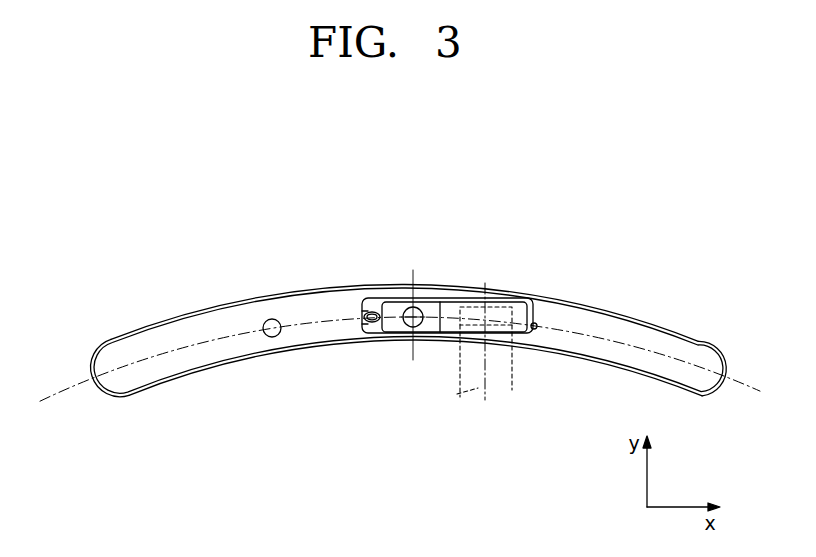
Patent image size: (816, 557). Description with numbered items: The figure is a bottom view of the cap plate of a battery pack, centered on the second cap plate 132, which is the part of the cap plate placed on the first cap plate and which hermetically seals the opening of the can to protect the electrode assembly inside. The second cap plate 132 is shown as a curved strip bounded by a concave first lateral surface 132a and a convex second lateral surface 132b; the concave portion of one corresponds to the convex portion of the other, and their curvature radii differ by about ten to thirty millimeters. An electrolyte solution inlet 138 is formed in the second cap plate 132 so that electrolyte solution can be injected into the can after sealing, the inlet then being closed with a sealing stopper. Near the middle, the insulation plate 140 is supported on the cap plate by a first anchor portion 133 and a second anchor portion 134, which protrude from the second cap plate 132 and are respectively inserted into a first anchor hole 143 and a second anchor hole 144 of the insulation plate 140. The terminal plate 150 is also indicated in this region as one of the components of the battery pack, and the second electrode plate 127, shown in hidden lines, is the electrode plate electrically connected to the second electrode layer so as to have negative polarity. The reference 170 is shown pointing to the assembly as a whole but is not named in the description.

The wearable device band assembly 170 is at (654, 260).
The second cap plate 132 is at (676, 343).
The first lateral surface 132a is at (163, 385).
The second lateral surface 132b is at (178, 318).
The electrolyte solution inlet 138 is at (275, 337).
The first anchor hole 143 is at (537, 313).
The insulation plate 140 is at (512, 302).
The terminal plate 150 is at (398, 307).
The second anchor portion 134 is at (357, 314).
The second anchor hole 144 is at (365, 328).
The first anchor portion 133 is at (536, 328).
The second electrode plate 127 is at (497, 377).